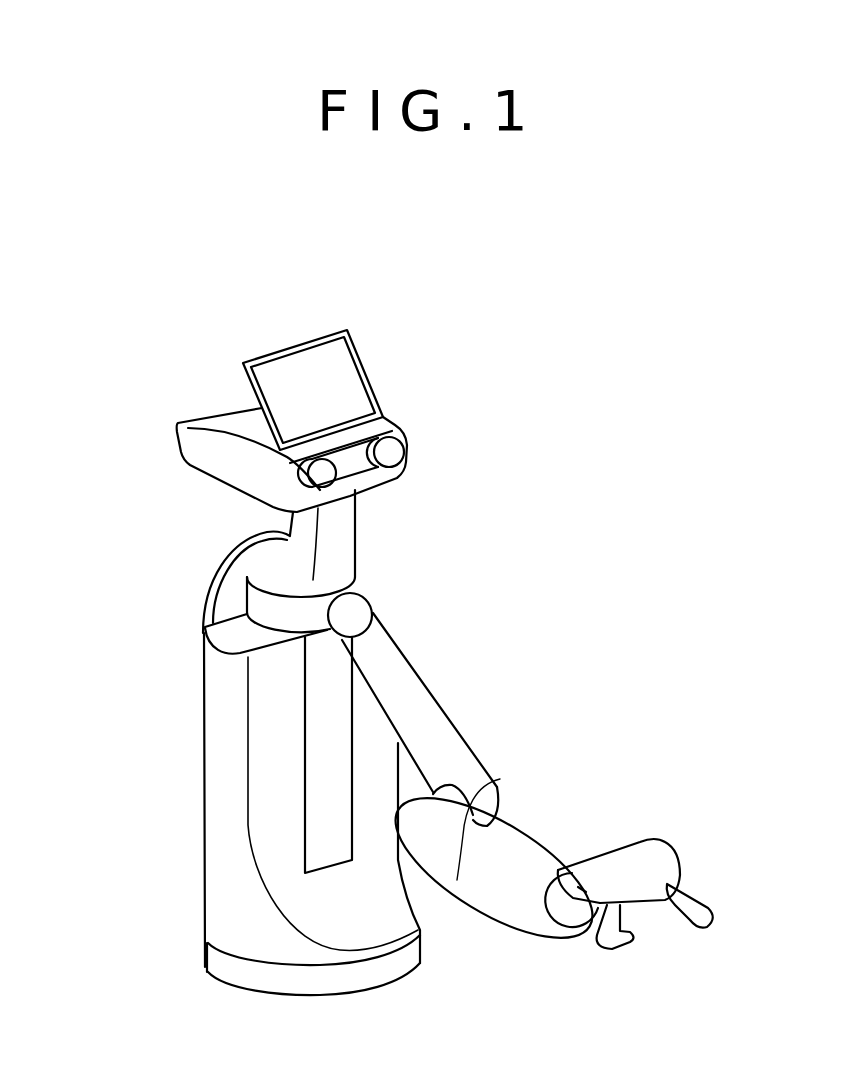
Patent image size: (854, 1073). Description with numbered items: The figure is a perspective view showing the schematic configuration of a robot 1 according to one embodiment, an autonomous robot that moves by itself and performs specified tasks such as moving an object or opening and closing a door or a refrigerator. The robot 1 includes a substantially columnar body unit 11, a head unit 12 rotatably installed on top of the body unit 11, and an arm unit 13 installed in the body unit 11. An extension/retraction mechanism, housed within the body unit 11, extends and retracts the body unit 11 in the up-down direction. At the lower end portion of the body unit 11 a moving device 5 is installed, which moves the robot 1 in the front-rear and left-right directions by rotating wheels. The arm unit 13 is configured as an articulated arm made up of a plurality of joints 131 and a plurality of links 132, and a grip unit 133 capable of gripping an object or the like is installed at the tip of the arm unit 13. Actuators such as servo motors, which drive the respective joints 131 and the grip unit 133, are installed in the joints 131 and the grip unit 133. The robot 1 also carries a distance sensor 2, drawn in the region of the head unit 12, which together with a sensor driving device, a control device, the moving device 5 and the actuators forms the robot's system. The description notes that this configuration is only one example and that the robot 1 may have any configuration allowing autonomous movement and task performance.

The robot 1 is at (172, 613).
The distance sensor 2 is at (408, 445).
The moving device 5 is at (232, 963).
The body unit 11 is at (225, 705).
The head unit 12 is at (190, 442).
The arm unit 13 is at (455, 738).
The joints 131 is at (372, 609).
The links 132 is at (418, 683).
The grip unit 133 is at (658, 852).